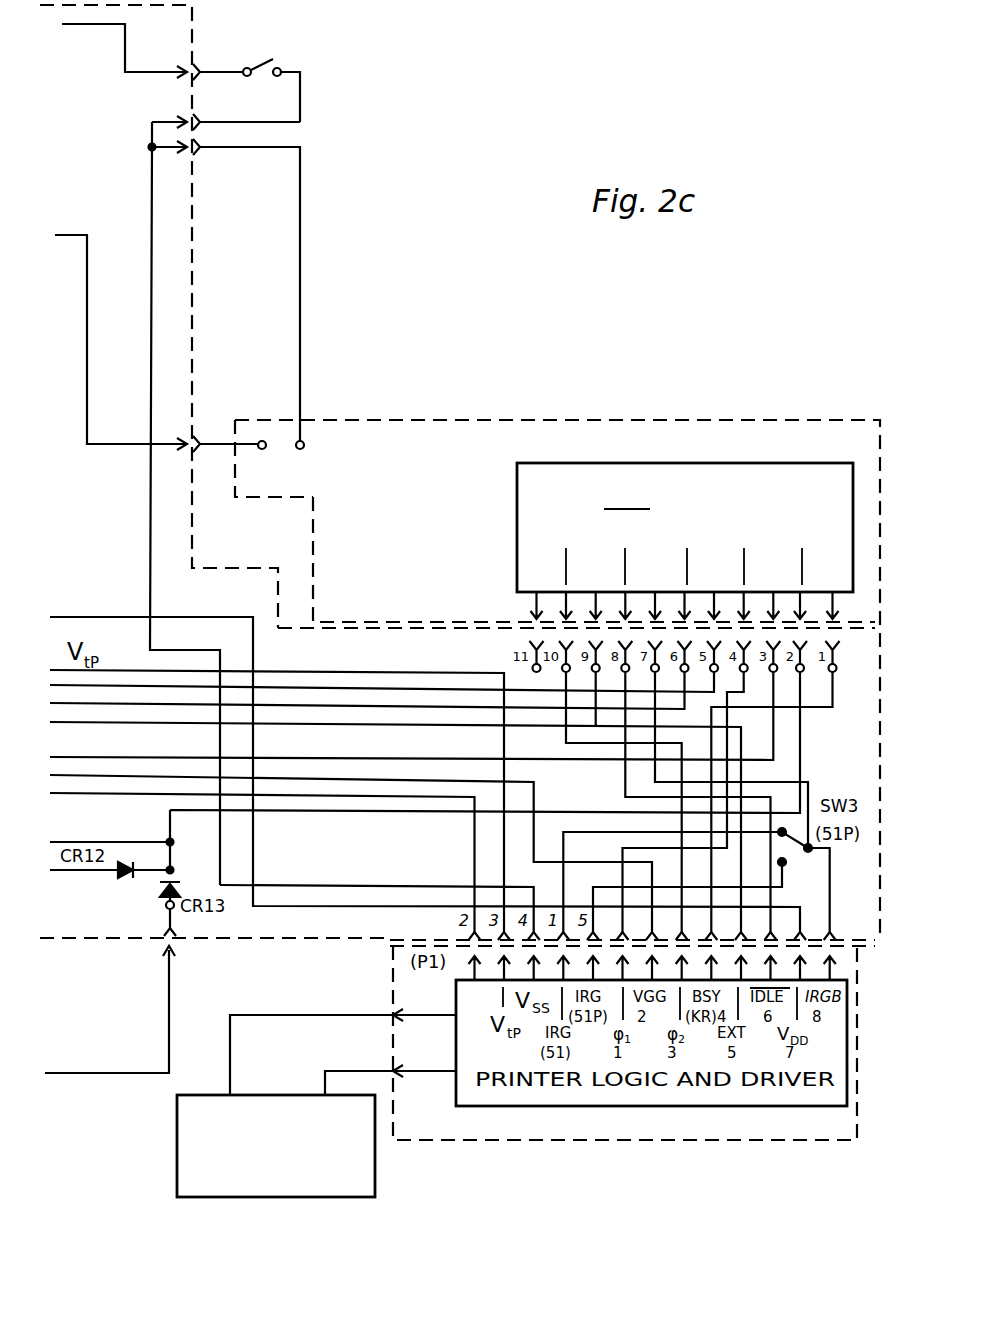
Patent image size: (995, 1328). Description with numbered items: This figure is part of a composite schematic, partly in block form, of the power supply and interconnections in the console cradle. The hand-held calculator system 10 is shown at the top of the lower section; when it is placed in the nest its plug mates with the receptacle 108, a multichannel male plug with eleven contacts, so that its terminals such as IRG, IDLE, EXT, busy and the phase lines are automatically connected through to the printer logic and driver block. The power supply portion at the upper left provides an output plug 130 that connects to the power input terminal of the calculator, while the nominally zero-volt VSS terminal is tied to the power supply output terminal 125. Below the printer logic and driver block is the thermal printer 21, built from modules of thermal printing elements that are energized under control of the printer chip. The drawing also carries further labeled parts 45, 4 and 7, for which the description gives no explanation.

The output terminal 125 is at (193, 71).
The output plug 130 is at (200, 157).
The calculator system 10 is at (838, 501).
The receptacle 108 is at (480, 683).
The print head 45 is at (326, 1074).
The motor 4 is at (370, 1092).
The thermal printer 21 is at (276, 1146).
The connector pin 7 is at (110, 991).